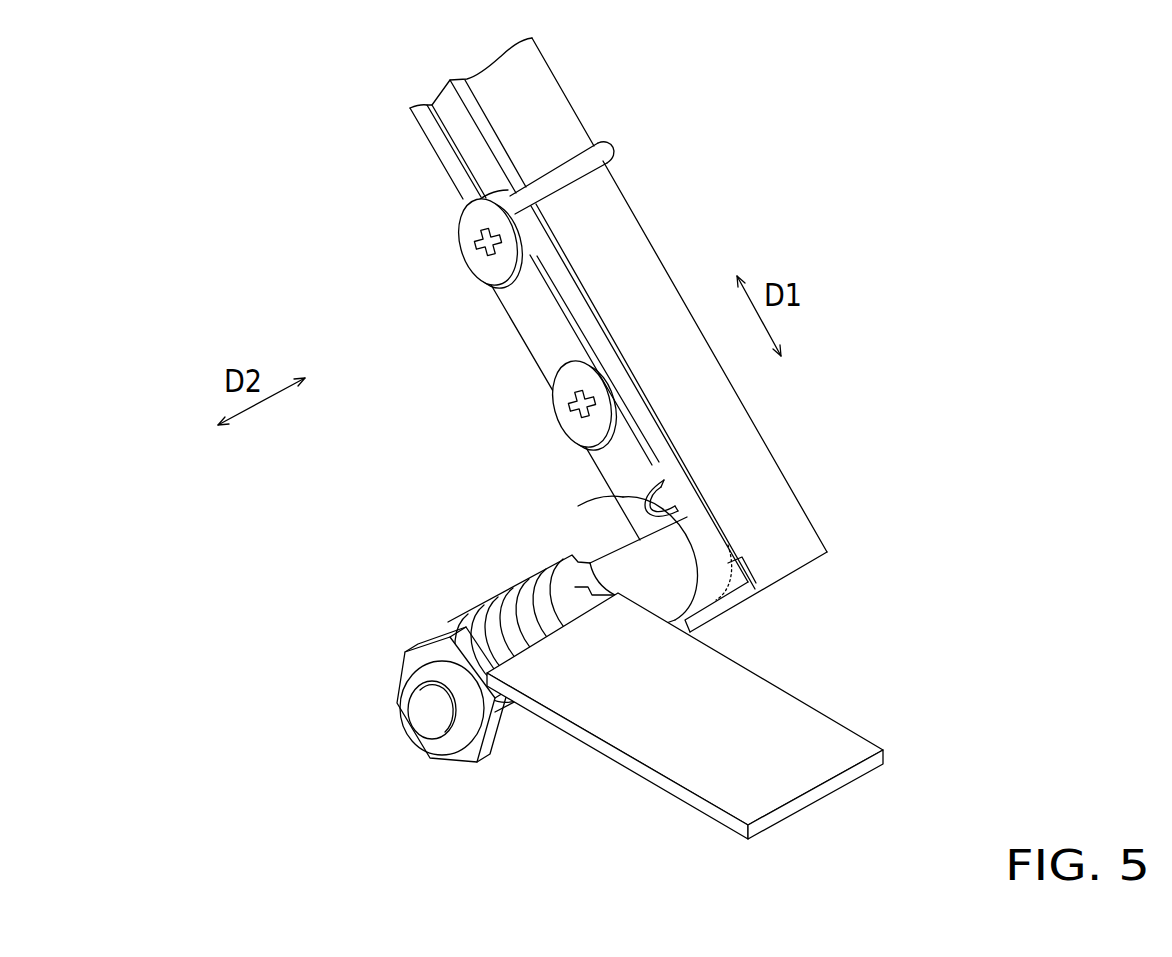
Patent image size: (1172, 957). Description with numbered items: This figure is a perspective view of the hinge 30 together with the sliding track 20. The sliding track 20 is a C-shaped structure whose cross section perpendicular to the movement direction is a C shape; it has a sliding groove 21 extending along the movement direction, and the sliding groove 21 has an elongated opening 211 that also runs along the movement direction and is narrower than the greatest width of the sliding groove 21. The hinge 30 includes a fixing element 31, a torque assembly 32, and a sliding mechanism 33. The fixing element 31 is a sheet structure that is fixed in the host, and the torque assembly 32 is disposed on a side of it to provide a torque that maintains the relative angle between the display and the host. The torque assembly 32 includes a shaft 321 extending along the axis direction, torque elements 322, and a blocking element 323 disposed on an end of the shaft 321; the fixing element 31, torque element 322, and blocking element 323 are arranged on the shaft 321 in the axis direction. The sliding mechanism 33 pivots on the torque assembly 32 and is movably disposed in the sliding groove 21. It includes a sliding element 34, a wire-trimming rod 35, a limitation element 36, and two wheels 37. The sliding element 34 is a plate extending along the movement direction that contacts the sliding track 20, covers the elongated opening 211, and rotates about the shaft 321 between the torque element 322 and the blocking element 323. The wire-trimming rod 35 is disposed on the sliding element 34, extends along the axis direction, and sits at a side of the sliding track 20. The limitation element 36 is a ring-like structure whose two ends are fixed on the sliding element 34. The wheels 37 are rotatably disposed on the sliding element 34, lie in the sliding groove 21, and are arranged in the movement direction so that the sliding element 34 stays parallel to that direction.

The sliding track 20 is at (645, 232).
The sliding groove 21 is at (468, 130).
The elongated opening 211 is at (458, 162).
The hinge 30 is at (368, 567).
The fixing element 31 is at (797, 732).
The torque assembly 32 is at (390, 738).
The shaft 321 is at (425, 710).
The torque element 322 is at (462, 632).
The blocking element 323 is at (737, 566).
The sliding mechanism 33 is at (480, 400).
The sliding element 34 is at (543, 323).
The wire-trimming rod 35 is at (610, 140).
The limitation element 36 is at (640, 502).
The wheels 37 is at (465, 262).